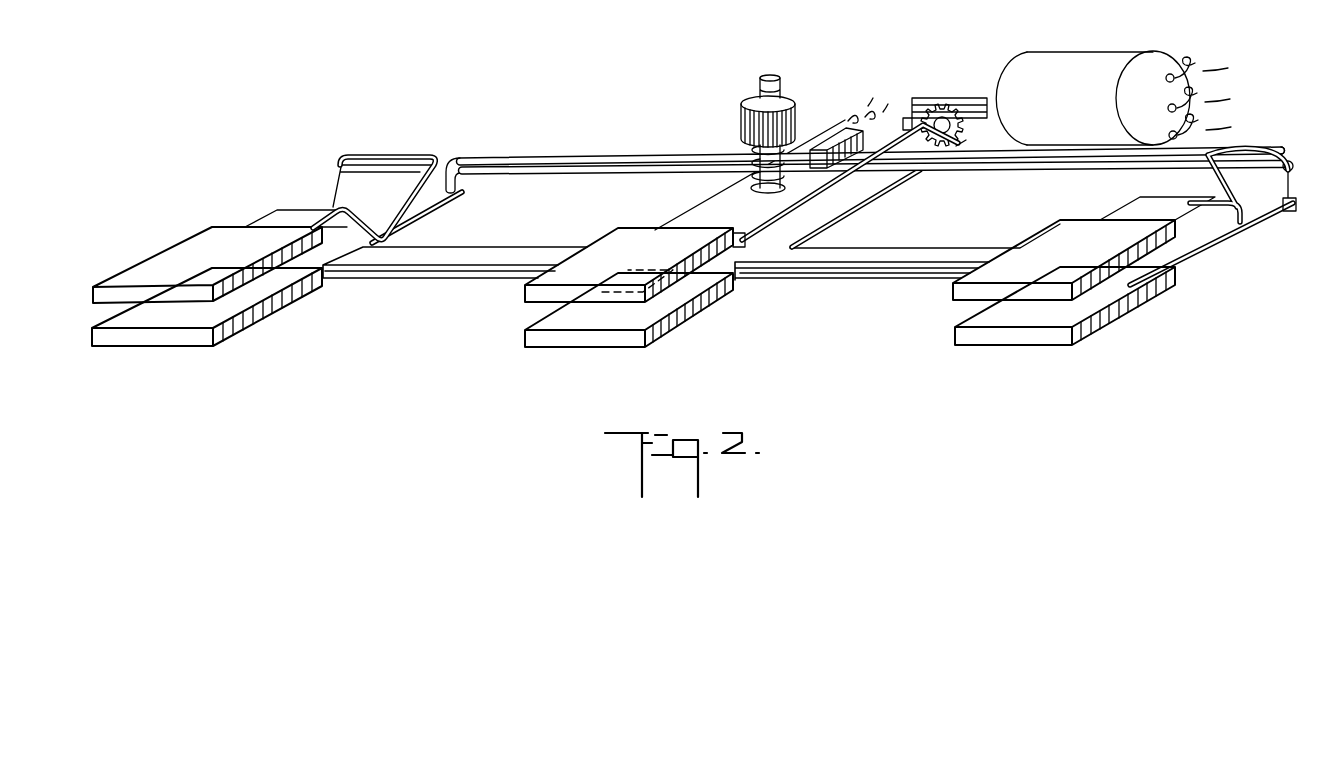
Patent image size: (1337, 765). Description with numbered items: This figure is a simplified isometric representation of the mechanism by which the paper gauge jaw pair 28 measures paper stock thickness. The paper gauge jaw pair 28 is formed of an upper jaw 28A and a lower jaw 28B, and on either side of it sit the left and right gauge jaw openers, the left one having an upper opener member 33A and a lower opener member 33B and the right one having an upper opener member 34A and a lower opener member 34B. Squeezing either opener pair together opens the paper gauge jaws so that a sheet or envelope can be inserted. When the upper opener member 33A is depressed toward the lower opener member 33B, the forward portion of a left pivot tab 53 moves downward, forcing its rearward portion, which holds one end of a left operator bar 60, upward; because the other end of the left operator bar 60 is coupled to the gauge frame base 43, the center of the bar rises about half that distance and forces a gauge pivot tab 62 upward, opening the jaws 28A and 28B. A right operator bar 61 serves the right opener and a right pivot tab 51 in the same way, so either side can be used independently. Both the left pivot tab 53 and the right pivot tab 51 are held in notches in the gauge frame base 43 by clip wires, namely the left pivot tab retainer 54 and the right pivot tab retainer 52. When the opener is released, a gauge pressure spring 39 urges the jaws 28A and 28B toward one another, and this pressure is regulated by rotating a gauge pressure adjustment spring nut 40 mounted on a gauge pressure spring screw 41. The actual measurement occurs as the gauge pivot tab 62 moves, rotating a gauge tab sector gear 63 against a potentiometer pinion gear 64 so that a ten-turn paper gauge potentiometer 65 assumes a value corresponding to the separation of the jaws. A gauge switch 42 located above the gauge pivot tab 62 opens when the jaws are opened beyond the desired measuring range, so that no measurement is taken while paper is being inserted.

The paper gauge jaw pair 28 is at (667, 290).
The upper jaw 28A is at (530, 296).
The lower jaw 28B is at (527, 340).
The upper opener member 33A is at (93, 285).
The lower opener member 33B is at (128, 343).
The upper opener member 34A is at (953, 297).
The lower opener member 34B is at (967, 338).
The gauge pressure spring 39 is at (727, 170).
The gauge pressure adjustment spring nut 40 is at (793, 102).
The gauge pressure spring screw 41 is at (772, 75).
The gauge switch 42 is at (837, 137).
The gauge frame base 43 is at (430, 255).
The right pivot tab 51 is at (1192, 179).
The right pivot tab retainer 52 is at (1247, 240).
The left pivot tab 53 is at (272, 218).
The left pivot tab retainer 54 is at (382, 230).
The left operator bar 60 is at (558, 158).
The right operator bar 61 is at (1018, 170).
The gauge pivot tab 62 is at (685, 213).
The gauge tab sector gear 63 is at (910, 118).
The potentiometer pinion gear 64 is at (970, 97).
The paper gauge potentiometer 65 is at (1087, 65).